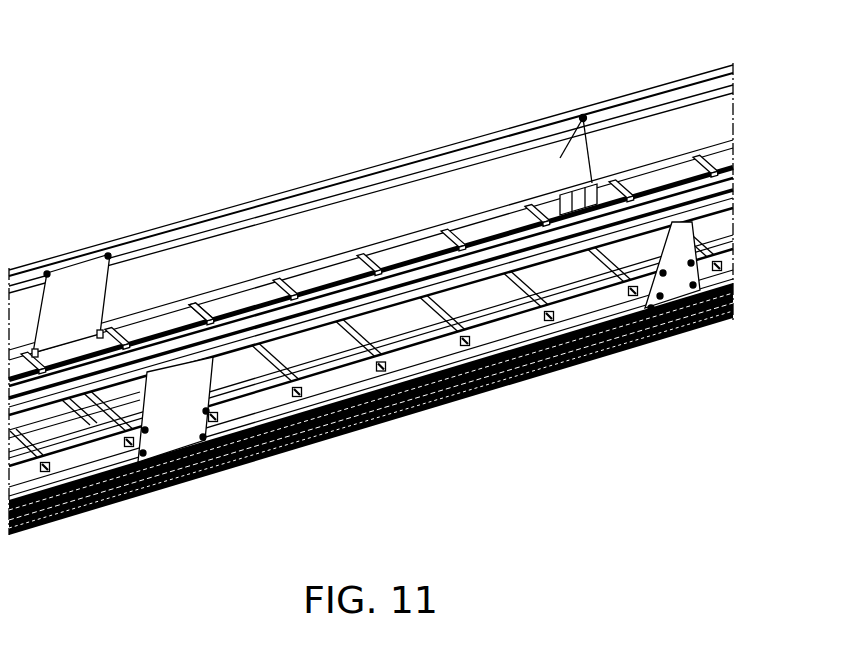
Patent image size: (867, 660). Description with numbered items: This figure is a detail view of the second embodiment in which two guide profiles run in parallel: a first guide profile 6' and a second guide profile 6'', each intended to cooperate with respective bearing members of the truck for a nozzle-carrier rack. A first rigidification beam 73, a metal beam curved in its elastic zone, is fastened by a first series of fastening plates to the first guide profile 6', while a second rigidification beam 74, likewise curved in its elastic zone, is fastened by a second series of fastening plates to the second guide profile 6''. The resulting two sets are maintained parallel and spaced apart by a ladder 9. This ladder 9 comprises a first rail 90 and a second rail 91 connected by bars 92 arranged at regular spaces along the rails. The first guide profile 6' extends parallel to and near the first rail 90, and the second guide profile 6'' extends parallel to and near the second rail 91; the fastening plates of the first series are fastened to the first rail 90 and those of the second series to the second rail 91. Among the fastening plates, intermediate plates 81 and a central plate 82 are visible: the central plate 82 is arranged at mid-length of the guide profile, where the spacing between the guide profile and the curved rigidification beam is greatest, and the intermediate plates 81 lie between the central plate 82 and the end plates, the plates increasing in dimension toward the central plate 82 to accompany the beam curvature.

The first rigidification beam 73 is at (300, 188).
The second rigidification beam 74 is at (430, 272).
The first guide profile 6' is at (399, 281).
The second guide profile 6'' is at (157, 457).
The second rail 91 is at (345, 384).
The ladder 9 is at (507, 338).
The bars 92 is at (461, 238).
The first rail 90 is at (214, 318).
The central plate 82 is at (75, 280).
The intermediate plate 81 is at (584, 155).